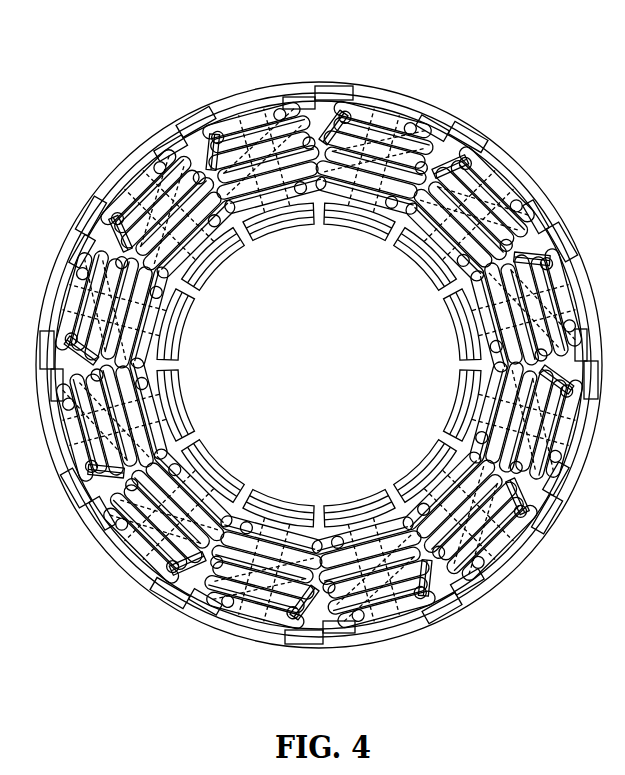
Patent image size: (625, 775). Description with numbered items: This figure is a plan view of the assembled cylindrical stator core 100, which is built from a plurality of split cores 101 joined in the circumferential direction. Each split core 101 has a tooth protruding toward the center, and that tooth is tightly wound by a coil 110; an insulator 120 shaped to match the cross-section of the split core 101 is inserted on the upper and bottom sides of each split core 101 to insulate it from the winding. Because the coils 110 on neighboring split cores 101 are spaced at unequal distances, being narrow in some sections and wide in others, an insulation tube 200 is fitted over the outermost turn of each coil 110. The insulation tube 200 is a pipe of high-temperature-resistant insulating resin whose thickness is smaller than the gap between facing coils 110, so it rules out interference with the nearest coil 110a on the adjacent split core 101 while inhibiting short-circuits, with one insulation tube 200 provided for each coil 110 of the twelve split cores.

The stator core 100 is at (477, 113).
The split core 101 is at (259, 92).
The coil 110 is at (252, 142).
The nearest coil 110a is at (155, 172).
The insulator 120 is at (360, 113).
The insulation tube 200 is at (193, 178).